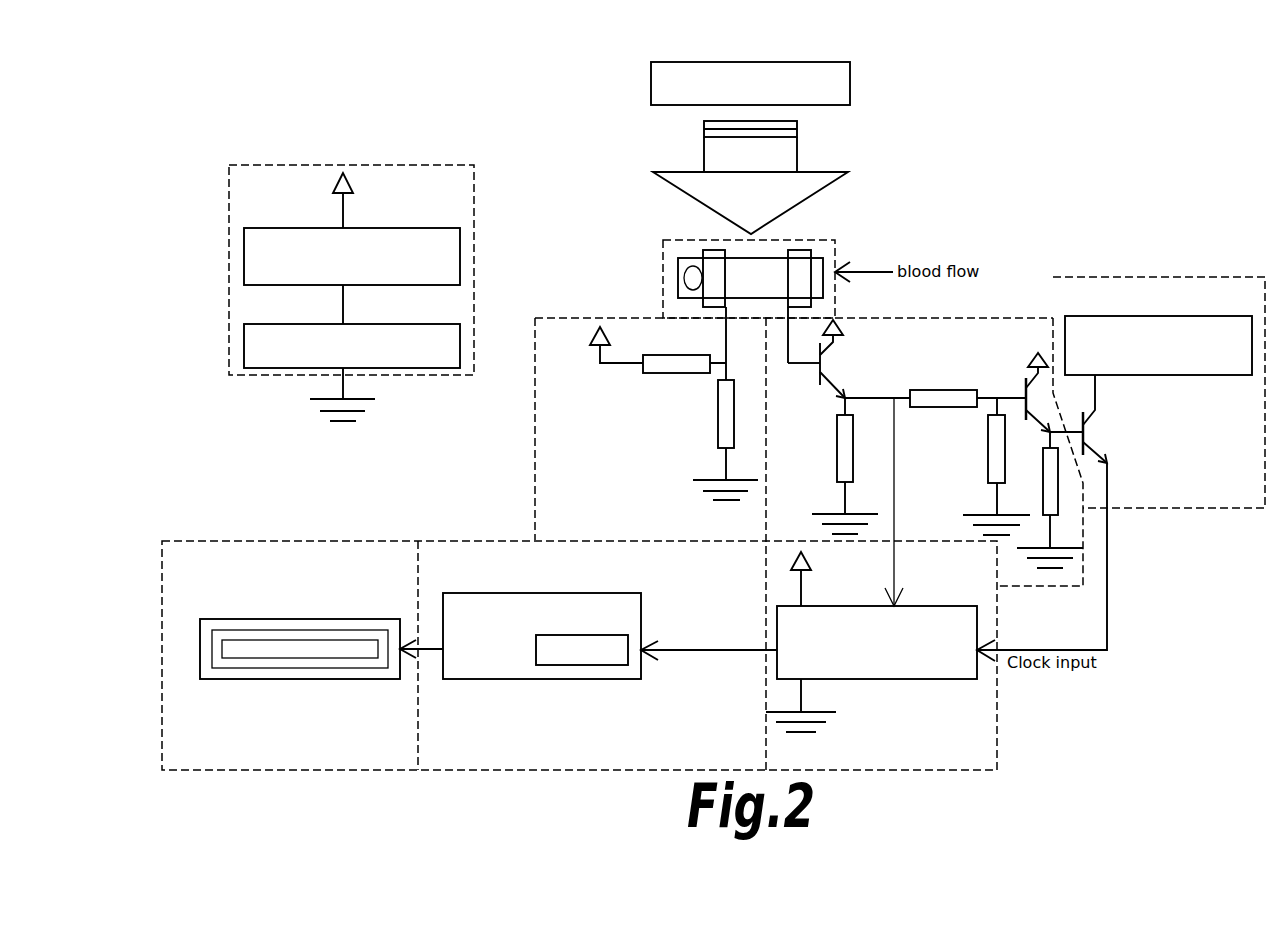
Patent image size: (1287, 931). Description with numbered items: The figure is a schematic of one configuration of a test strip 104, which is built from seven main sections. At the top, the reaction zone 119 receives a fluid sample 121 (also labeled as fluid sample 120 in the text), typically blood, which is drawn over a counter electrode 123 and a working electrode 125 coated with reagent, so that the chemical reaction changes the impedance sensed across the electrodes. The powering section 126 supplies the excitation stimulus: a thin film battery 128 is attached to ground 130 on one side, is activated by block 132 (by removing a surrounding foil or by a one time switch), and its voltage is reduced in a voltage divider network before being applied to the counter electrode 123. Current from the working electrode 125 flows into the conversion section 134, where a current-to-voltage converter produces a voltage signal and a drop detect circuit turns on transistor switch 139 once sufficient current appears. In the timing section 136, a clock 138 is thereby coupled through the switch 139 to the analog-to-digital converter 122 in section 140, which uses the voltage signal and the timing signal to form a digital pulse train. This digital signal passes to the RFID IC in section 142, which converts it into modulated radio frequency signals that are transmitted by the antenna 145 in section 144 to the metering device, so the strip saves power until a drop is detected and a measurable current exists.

The test strip 104 is at (850, 82).
The reaction zone 119 is at (743, 249).
The fluid sample 120 is at (344, 304).
The fluid sample 121 is at (678, 288).
The analog-to-digital converter 122 is at (977, 679).
The counter electrode 123 is at (703, 250).
The working electrode 125 is at (800, 250).
The powering section 126 is at (535, 473).
The thin film battery 128 is at (460, 345).
The ground 130 is at (367, 414).
The block 132 is at (460, 255).
The conversion section 134 is at (975, 318).
The timing section 136 is at (1159, 356).
The clock 138 is at (1215, 375).
The transistor switch 139 is at (1142, 419).
The section 140 is at (616, 682).
The section 142 is at (569, 770).
The section 144 is at (321, 704).
The antenna 145 is at (290, 679).